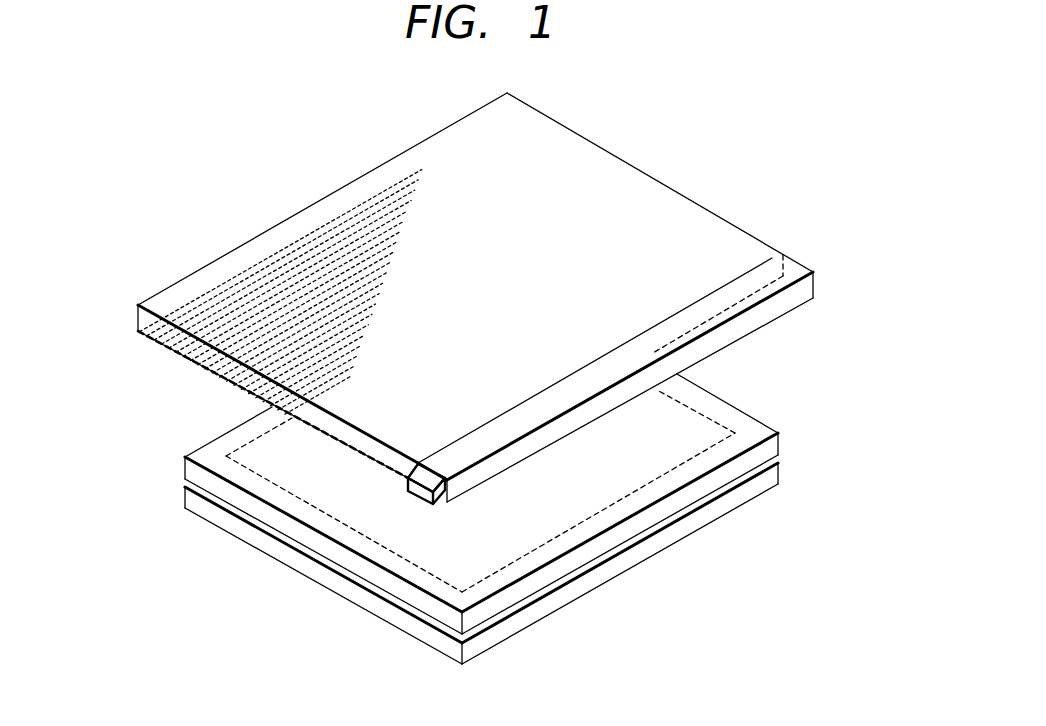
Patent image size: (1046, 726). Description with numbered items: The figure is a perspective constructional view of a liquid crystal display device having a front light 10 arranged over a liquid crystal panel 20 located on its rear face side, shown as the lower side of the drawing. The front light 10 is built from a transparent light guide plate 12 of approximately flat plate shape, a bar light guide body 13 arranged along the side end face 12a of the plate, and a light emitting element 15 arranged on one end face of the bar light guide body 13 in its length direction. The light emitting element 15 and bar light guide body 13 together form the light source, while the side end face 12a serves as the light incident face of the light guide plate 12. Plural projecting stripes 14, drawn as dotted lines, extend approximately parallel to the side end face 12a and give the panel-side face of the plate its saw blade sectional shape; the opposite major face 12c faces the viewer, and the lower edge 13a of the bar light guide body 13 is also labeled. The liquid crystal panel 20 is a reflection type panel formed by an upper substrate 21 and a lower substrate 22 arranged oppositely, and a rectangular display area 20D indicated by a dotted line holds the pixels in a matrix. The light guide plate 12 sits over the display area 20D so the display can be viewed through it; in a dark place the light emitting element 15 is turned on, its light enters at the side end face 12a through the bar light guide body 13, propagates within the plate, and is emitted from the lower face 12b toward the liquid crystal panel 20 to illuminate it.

The front light 10 is at (479, 309).
The light guide plate 12 is at (477, 274).
The side end face 12a is at (705, 312).
The lower face 12b is at (208, 371).
The top surface of plate 12c is at (598, 168).
The bar light guide body 13 is at (625, 339).
The bottom edge of frame member 13a is at (650, 377).
The projecting stripes 14 is at (308, 245).
The light emitting element 15 is at (419, 493).
The liquid crystal panel 20 is at (438, 519).
The display area 20D is at (525, 555).
The upper substrate 21 is at (438, 504).
The lower substrate 22 is at (195, 502).